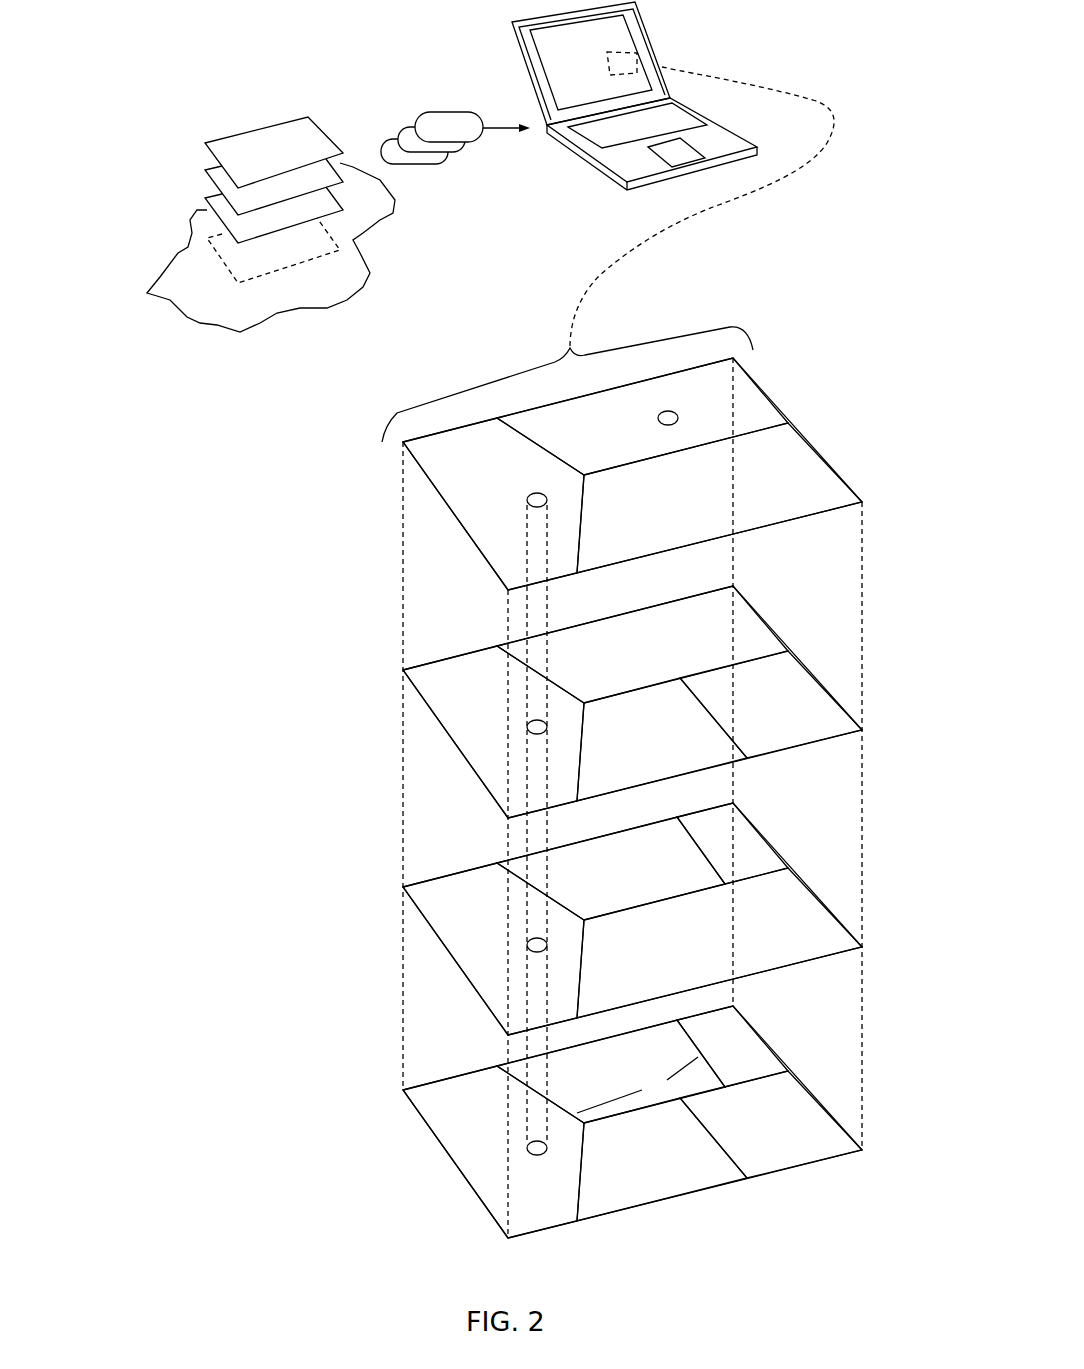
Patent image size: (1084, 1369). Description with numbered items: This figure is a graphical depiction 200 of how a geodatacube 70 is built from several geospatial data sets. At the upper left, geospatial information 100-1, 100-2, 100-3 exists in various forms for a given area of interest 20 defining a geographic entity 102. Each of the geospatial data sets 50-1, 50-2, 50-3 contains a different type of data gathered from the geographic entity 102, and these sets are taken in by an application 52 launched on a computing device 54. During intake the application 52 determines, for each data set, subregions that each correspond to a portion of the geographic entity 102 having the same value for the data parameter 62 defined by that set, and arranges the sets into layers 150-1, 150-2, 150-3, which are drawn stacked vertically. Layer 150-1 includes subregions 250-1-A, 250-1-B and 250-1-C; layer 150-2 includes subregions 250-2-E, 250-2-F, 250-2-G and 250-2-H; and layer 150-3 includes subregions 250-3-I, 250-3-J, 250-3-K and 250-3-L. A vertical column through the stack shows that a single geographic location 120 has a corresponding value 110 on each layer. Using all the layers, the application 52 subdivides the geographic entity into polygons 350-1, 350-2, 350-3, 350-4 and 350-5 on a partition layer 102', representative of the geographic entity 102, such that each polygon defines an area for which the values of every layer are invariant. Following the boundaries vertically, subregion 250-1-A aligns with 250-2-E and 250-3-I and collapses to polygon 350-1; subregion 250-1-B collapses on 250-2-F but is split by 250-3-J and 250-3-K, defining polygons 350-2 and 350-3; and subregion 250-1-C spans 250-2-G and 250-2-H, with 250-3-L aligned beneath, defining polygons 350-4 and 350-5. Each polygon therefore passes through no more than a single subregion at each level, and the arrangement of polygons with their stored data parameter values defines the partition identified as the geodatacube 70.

The geospatial information 100-1 is at (233, 145).
The geospatial information 100-2 is at (223, 165).
The geospatial information 100-3 is at (213, 200).
The geographic entity 102 is at (228, 250).
The region of interest 20 is at (172, 302).
The geospatial data set 50-1 is at (445, 120).
The geospatial data set 50-2 is at (452, 148).
The geospatial data set 50-3 is at (417, 160).
The application 52 is at (637, 53).
The computing device 54 is at (720, 128).
The data parameter 62 is at (660, 417).
The corresponding value 110 is at (527, 497).
The geographic location 120 is at (527, 1148).
The layer 150-1 is at (447, 510).
The layer 150-2 is at (447, 735).
The layer 150-3 is at (447, 955).
The subregion 250-1-A is at (515, 466).
The subregion 250-1-B is at (640, 452).
The subregion 250-1-C is at (696, 516).
The subregion 250-2-E is at (498, 690).
The subregion 250-2-F is at (680, 655).
The subregion 250-2-G is at (685, 753).
The subregion 250-2-H is at (822, 722).
The subregion 250-3-I is at (490, 912).
The subregion 250-3-J is at (677, 879).
The subregion 250-3-K is at (747, 847).
The subregion 250-3-L is at (693, 961).
The polygon 350-1 is at (492, 1116).
The polygon 350-2 is at (643, 1074).
The polygon 350-3 is at (748, 1040).
The polygon 350-4 is at (673, 1165).
The polygon 350-5 is at (794, 1132).
The geodatacube 70 is at (637, 1085).
The partition layer 102' is at (641, 1122).
The layered model 200 is at (340, 1216).